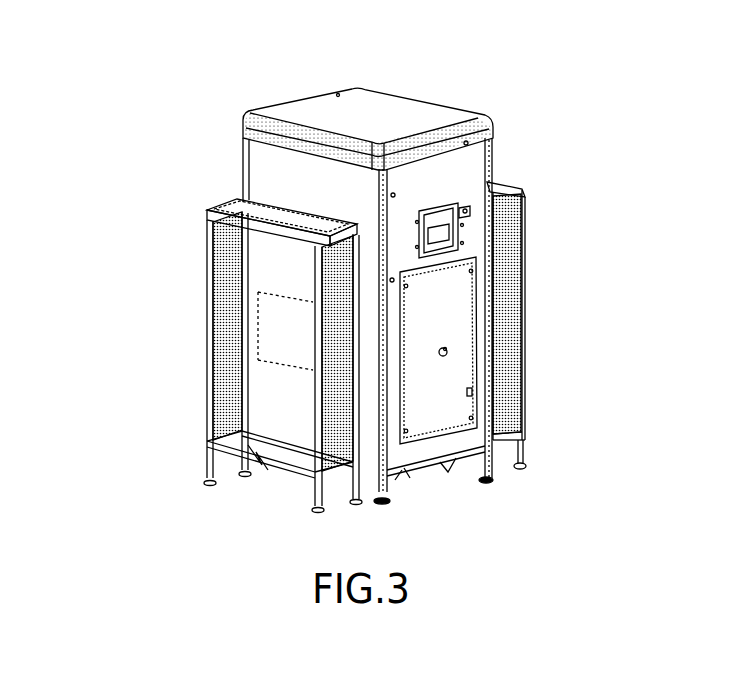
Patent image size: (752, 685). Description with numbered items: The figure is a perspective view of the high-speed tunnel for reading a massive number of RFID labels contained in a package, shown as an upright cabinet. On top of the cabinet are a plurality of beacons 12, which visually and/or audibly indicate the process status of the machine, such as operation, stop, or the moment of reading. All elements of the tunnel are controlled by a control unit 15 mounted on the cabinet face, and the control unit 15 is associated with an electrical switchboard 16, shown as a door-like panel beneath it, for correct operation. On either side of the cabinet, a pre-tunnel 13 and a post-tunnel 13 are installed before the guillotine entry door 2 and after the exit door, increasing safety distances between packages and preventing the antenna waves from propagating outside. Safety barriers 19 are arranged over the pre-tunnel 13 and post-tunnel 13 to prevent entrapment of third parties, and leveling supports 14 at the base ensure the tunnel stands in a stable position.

The guillotine entry door 2 is at (280, 313).
The beacons 12 is at (327, 131).
The pre-tunnel and post-tunnel 13 is at (335, 418).
The leveling supports 14 is at (385, 500).
The control unit 15 is at (445, 237).
The electrical switchboard 16 is at (443, 365).
The safety barriers 19 is at (318, 258).